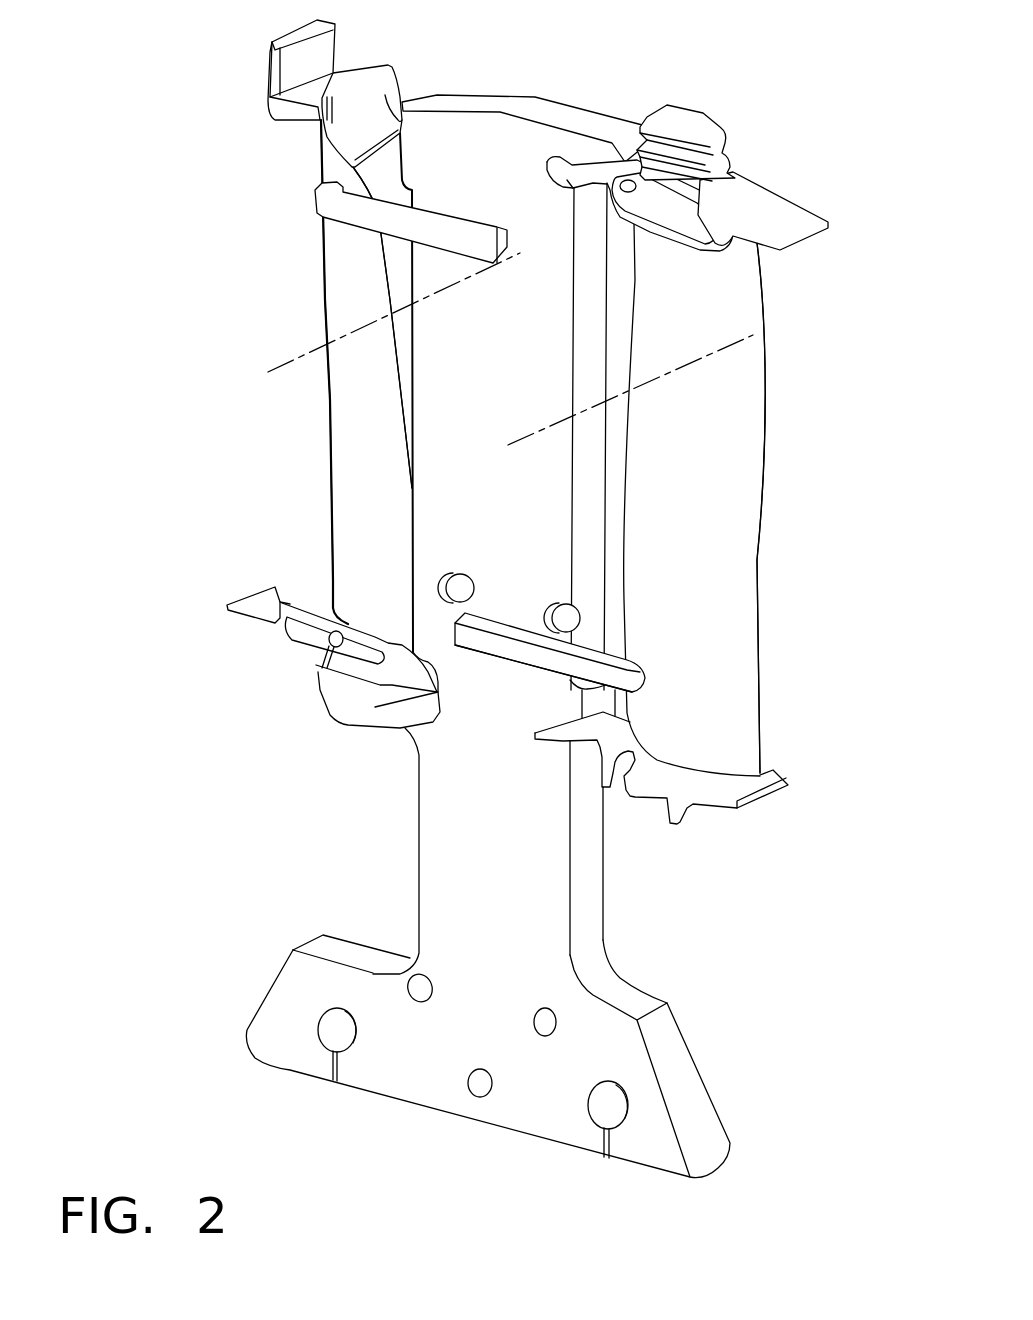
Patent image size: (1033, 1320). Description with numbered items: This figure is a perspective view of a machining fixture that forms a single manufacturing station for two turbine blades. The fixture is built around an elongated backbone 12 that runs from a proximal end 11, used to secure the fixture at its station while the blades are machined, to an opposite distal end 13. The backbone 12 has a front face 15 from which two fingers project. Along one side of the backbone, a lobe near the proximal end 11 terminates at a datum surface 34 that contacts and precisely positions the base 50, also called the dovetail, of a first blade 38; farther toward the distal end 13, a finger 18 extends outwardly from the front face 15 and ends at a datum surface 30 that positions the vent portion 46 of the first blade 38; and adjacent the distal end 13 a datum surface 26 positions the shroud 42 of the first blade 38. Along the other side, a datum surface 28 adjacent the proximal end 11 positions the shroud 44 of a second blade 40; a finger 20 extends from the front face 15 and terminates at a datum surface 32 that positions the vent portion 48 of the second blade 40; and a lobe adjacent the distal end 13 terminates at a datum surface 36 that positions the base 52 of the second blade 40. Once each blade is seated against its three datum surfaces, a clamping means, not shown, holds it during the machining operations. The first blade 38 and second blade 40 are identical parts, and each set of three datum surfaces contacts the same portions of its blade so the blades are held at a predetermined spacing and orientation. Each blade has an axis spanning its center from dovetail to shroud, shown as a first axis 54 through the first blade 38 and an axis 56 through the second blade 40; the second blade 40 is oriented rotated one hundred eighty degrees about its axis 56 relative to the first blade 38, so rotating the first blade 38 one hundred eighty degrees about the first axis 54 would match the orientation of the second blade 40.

The proximal end 11 is at (293, 1073).
The backbone 12 is at (427, 480).
The distal end 13 is at (550, 97).
The front face 15 is at (537, 443).
The finger 18 is at (360, 217).
The finger 20 is at (483, 653).
The datum surface 26 is at (390, 93).
The datum surface 28 is at (582, 698).
The datum surface 30 is at (317, 187).
The datum surface 32 is at (640, 660).
The datum surface 34 is at (400, 703).
The datum surface 36 is at (618, 120).
The first blade 38 is at (327, 452).
The second blade 40 is at (767, 383).
The shroud 42 is at (268, 63).
The shroud 44 is at (757, 803).
The vent portion 46 is at (327, 377).
The vent portion 48 is at (760, 497).
The base 50 is at (320, 675).
The base 52 is at (717, 153).
The first axis 54 is at (287, 358).
The axis 56 is at (593, 405).